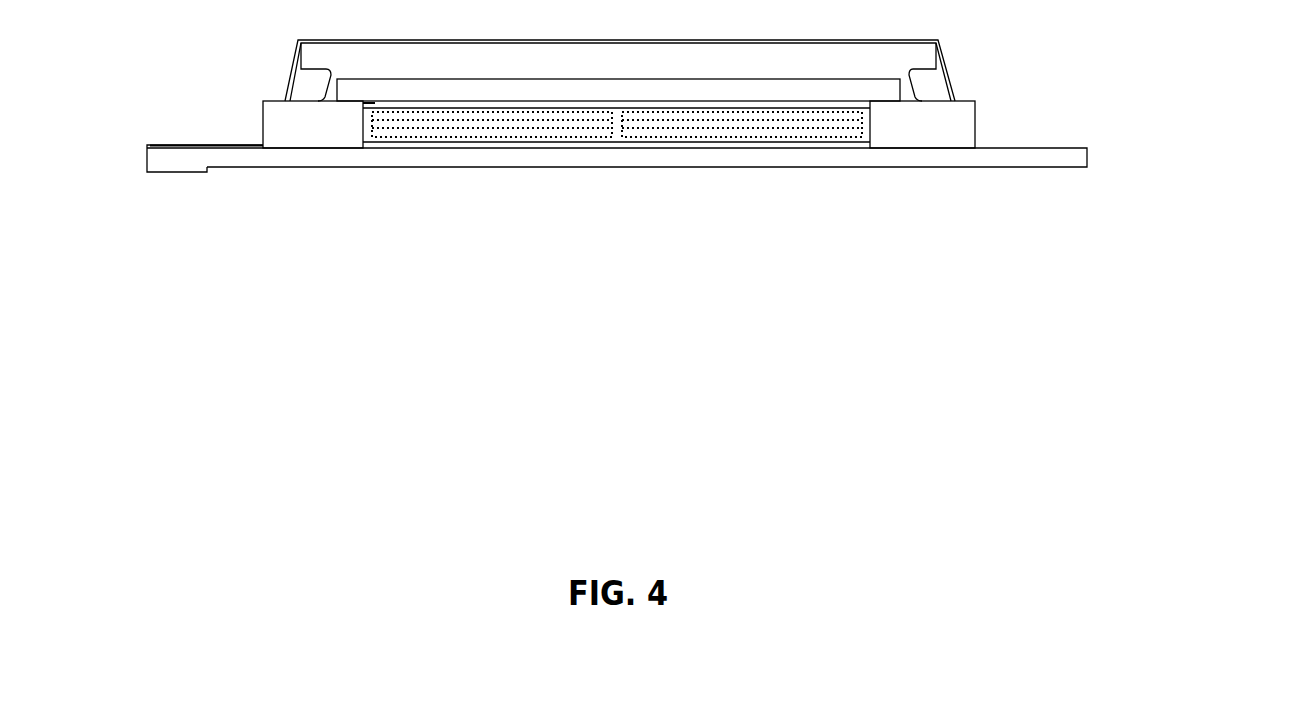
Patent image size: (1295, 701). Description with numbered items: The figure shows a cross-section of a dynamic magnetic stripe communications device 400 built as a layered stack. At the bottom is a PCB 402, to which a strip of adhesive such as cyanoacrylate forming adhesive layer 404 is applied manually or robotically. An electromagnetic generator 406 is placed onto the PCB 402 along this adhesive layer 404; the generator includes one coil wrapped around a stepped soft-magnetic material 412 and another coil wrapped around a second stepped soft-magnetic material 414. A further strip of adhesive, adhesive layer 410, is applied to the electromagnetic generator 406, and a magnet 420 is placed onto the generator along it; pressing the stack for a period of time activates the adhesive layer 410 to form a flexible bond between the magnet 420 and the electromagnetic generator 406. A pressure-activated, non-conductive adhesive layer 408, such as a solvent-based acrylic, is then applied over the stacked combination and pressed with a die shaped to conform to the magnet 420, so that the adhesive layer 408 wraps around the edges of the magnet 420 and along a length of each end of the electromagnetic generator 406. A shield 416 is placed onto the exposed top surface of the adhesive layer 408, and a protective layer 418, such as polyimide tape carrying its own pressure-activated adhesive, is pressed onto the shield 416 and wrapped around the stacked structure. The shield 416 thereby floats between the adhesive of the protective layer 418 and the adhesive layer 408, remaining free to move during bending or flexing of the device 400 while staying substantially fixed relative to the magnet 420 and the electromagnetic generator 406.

The dynamic magnetic stripe communications device 400 is at (1251, 92).
The PCB 402 is at (1082, 158).
The adhesive layer 404 is at (873, 145).
The electromagnetic generator 406 is at (360, 128).
The adhesive layer 408 is at (966, 107).
The adhesive layer 410 is at (373, 105).
The soft-magnetic material 412 is at (497, 135).
The soft-magnetic material 414 is at (653, 134).
The shield 416 is at (606, 68).
The protective layer 418 is at (151, 146).
The magnet 420 is at (900, 92).